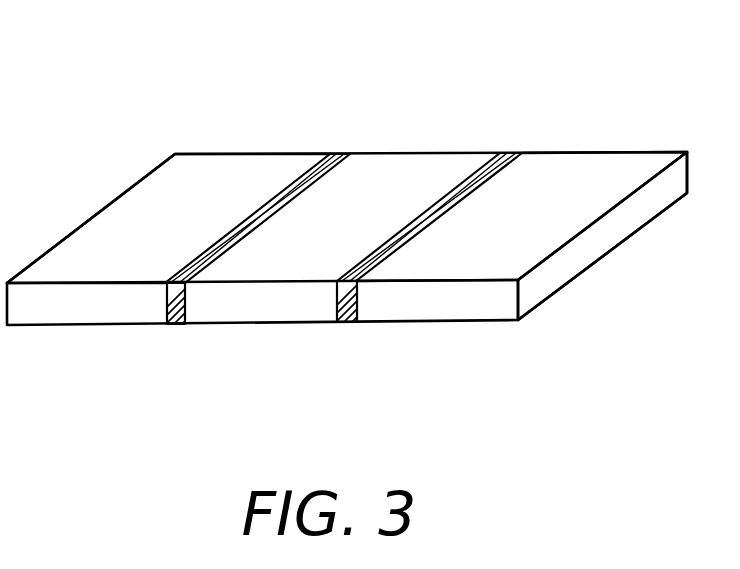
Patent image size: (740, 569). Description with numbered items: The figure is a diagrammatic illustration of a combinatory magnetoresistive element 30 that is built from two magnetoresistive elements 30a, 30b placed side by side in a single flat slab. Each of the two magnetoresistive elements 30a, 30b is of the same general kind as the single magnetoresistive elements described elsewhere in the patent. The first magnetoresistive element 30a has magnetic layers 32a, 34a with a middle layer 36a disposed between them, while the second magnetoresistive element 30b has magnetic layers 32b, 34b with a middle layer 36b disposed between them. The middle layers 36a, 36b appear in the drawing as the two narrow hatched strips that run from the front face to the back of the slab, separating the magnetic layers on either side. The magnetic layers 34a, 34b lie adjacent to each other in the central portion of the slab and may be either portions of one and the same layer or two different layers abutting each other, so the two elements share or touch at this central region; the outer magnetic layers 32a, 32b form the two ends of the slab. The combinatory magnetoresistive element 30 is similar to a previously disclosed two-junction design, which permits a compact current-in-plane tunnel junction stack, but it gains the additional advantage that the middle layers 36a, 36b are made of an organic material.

The combinatory magnetoresistive element 30 is at (140, 96).
The magnetoresistive element 30a is at (175, 107).
The magnetoresistive element 30b is at (462, 105).
The magnetic layer 32a is at (199, 180).
The magnetic layer 32b is at (592, 175).
The magnetic layer 34a is at (377, 177).
The magnetic layer 34b is at (457, 173).
The middle layer 36a is at (175, 313).
The middle layer 36b is at (340, 313).